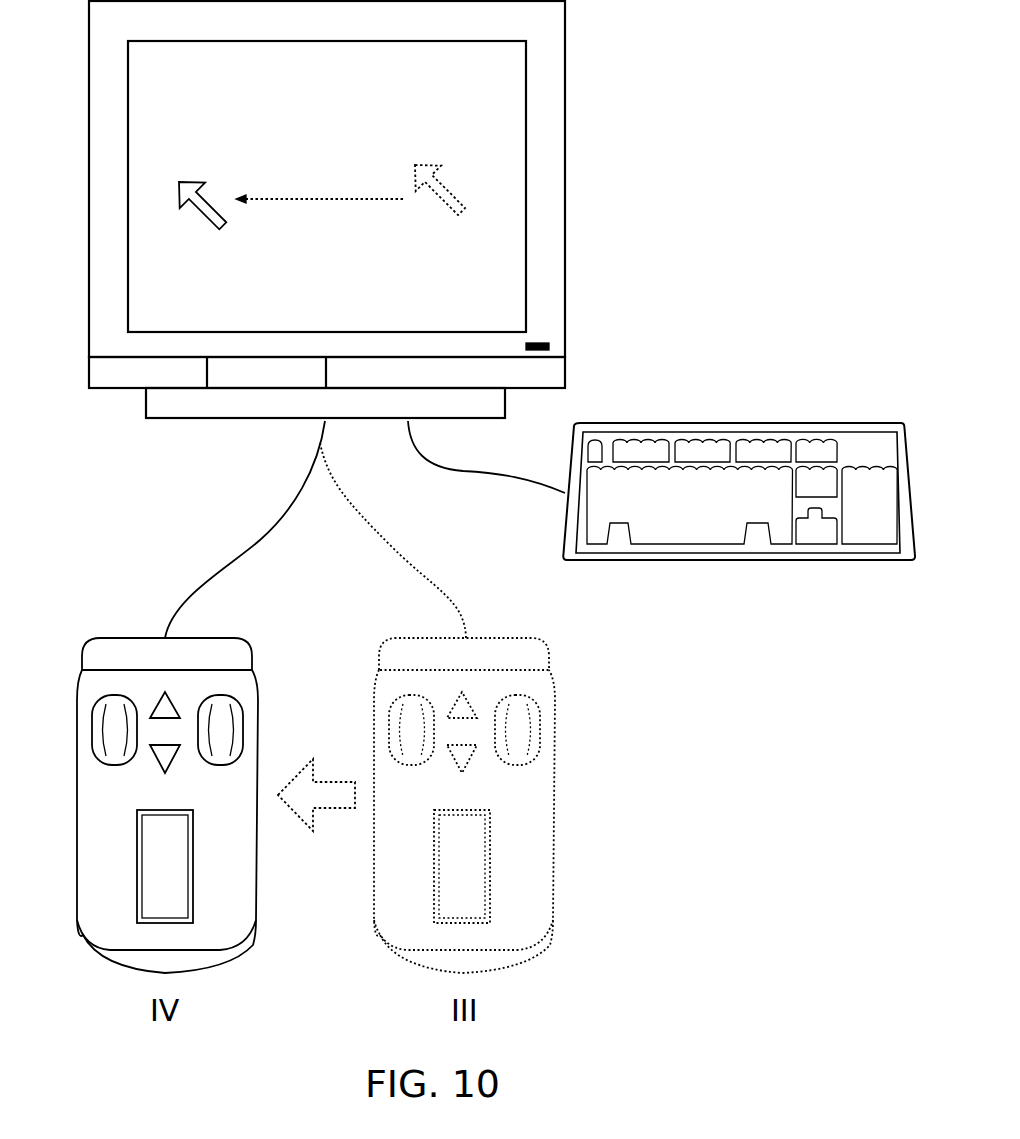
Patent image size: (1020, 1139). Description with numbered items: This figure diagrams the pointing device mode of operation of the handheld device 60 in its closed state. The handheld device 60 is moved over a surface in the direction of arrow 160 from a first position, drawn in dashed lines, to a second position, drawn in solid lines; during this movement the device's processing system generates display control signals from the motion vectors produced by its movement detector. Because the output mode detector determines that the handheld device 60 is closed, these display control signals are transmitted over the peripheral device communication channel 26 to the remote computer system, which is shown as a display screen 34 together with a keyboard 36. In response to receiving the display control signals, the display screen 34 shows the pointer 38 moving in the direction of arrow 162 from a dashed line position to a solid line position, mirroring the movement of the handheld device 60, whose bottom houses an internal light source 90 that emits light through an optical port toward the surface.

The display screen 34 is at (89, 210).
The keyboard 36 is at (742, 423).
The pointer 38 is at (193, 182).
The arrow 162 is at (293, 199).
The peripheral device communication channel 26 is at (203, 585).
The handheld device 60 is at (70, 616).
The arrow 160 is at (333, 807).
The internal light source 90 is at (670, 761).